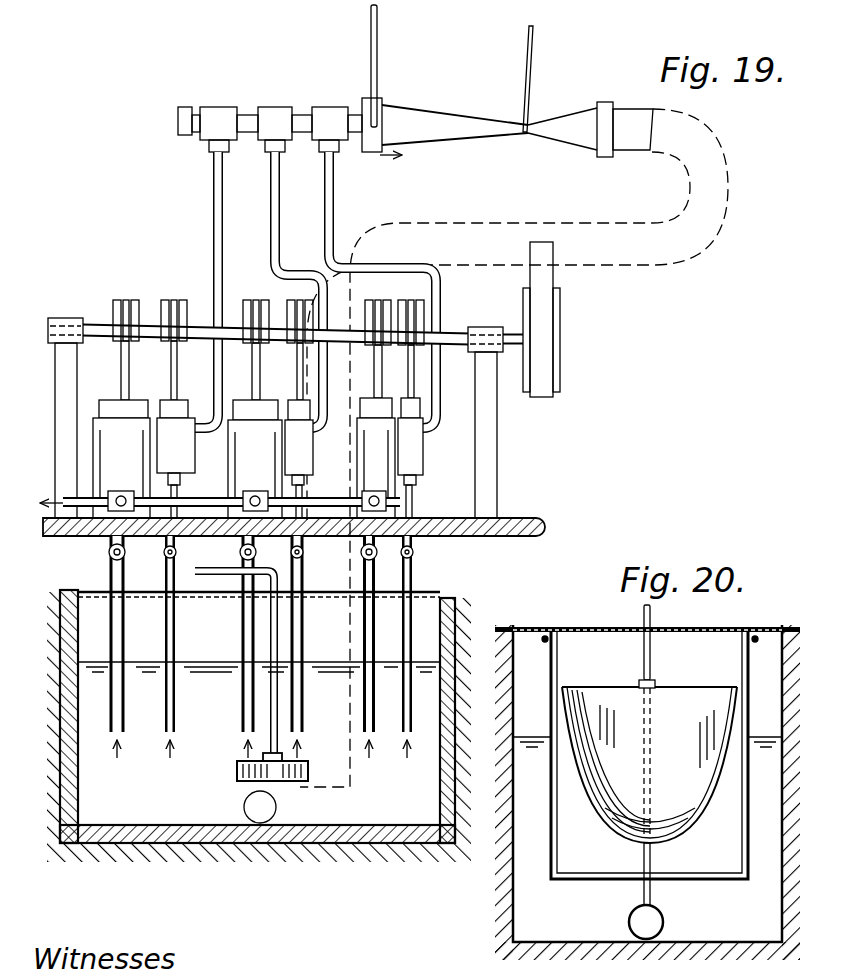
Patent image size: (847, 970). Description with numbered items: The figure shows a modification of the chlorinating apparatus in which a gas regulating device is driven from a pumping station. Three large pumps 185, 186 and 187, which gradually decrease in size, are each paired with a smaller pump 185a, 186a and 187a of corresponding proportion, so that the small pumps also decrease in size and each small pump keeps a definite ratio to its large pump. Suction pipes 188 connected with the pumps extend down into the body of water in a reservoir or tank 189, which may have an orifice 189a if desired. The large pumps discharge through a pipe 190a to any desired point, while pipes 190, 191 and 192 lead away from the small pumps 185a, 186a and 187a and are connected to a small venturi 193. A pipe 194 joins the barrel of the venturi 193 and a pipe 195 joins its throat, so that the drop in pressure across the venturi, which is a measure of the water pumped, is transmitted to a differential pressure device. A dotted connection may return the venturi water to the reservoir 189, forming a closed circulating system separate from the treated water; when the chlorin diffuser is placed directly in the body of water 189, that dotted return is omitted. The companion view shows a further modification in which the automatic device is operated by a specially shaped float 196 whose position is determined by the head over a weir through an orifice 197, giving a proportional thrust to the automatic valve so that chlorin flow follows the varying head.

In FIG. 19, the large pump 185 is at (121, 459).
In FIG. 19, the smaller pump 185a is at (180, 459).
In FIG. 19, the large pump 186 is at (255, 459).
In FIG. 19, the smaller pump 186a is at (322, 459).
In FIG. 19, the large pump 187 is at (376, 458).
In FIG. 19, the smaller pump 187a is at (423, 466).
In FIG. 19, the suction pipe 188 is at (126, 585).
In FIG. 19, the reservoir or tank 189 is at (80, 809).
In FIG. 19, the orifice 189a is at (258, 823).
In FIG. 19, the pipe 190 is at (213, 268).
In FIG. 19, the discharge pipe 190a is at (97, 513).
In FIG. 19, the pipe 191 is at (270, 268).
In FIG. 19, the pipe 192 is at (333, 244).
In FIG. 19, the venturi 193 is at (517, 129).
In FIG. 19, the pipe 194 is at (379, 30).
In FIG. 19, the pipe 195 is at (523, 72).
In FIG. 20, the float 196 is at (706, 684).
In FIG. 20, the orifice 197 is at (664, 921).